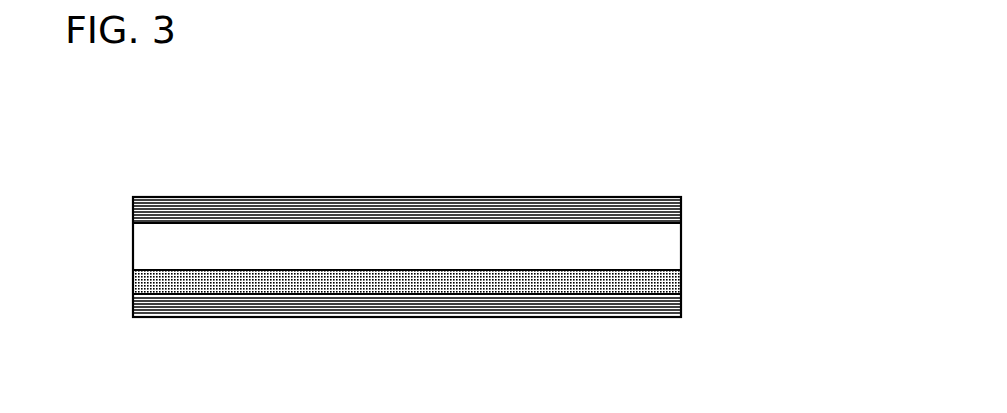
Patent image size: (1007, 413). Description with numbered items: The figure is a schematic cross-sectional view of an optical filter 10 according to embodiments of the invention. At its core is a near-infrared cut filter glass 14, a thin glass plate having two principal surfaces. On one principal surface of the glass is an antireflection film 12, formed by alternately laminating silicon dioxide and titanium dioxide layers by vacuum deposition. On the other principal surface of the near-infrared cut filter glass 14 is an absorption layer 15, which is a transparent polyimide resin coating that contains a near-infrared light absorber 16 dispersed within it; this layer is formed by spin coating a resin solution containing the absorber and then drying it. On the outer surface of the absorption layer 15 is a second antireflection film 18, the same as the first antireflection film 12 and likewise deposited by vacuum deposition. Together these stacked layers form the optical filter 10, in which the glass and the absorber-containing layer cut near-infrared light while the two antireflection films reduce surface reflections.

The optical filter 10 is at (700, 153).
The antireflection film 12 is at (685, 207).
The near-infrared cut filter glass 14 is at (685, 247).
The absorption layer 15 is at (685, 281).
The near-infrared light absorber 16 is at (500, 288).
The antireflection film 18 is at (685, 308).